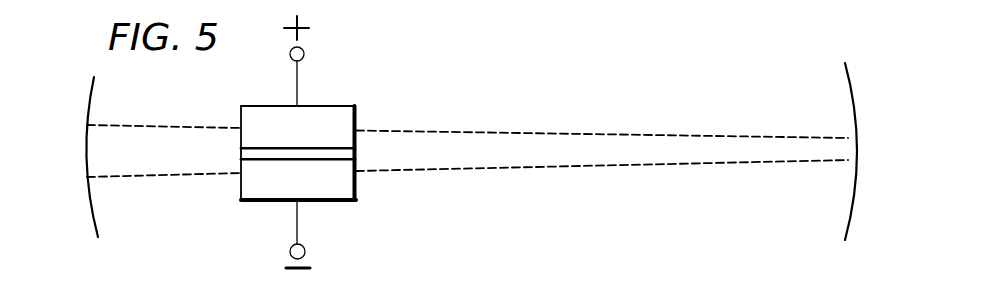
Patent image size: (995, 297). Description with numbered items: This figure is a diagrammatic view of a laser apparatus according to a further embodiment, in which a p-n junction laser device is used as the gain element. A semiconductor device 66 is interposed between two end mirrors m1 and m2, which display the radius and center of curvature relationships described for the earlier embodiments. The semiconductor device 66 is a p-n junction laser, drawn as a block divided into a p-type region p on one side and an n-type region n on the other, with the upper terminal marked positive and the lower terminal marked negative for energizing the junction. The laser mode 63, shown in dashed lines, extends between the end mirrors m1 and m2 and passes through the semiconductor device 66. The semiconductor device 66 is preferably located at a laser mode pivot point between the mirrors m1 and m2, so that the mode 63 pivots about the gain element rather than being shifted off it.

The end mirror m1 is at (94, 92).
The end mirror m2 is at (853, 92).
The mode 63 is at (190, 124).
The semiconductor device 66 is at (260, 185).
The p-type region p is at (317, 106).
The n-type region n is at (337, 186).